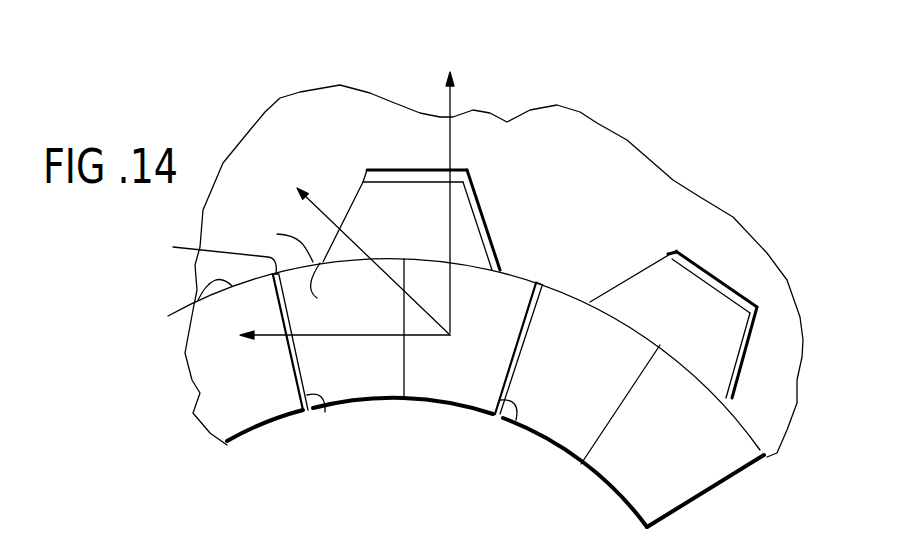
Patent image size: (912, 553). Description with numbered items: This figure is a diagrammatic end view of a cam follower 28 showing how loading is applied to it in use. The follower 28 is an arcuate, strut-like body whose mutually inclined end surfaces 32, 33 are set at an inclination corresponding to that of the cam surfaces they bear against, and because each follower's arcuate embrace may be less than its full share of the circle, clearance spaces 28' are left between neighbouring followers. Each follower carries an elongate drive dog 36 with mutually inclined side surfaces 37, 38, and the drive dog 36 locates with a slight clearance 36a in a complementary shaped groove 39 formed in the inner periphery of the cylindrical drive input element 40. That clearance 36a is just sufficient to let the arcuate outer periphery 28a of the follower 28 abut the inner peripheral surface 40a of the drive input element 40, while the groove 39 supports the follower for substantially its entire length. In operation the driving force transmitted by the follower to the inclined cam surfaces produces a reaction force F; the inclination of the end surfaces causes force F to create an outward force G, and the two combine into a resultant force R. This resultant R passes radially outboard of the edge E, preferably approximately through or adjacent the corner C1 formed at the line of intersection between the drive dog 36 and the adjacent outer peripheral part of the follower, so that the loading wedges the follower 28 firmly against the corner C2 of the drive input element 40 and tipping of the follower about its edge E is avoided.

The cam follower 28 is at (466, 397).
The clearance space 28' is at (388, 455).
The arcuate outer periphery 28a is at (537, 280).
The end surface 32 is at (313, 378).
The end surface 33 is at (497, 358).
The drive dog 36 is at (581, 225).
The clearance 36a is at (484, 223).
The side surface 37 is at (474, 192).
The side surface 38 is at (353, 196).
The groove 39 is at (380, 173).
The drive input element 40 is at (278, 120).
The inner peripheral surface 40a is at (164, 307).
The outward force G is at (458, 176).
The reaction force F is at (331, 330).
The resultant force R is at (357, 249).
The edge E is at (211, 250).
The corner C1 is at (335, 294).
The corner C2 is at (277, 237).